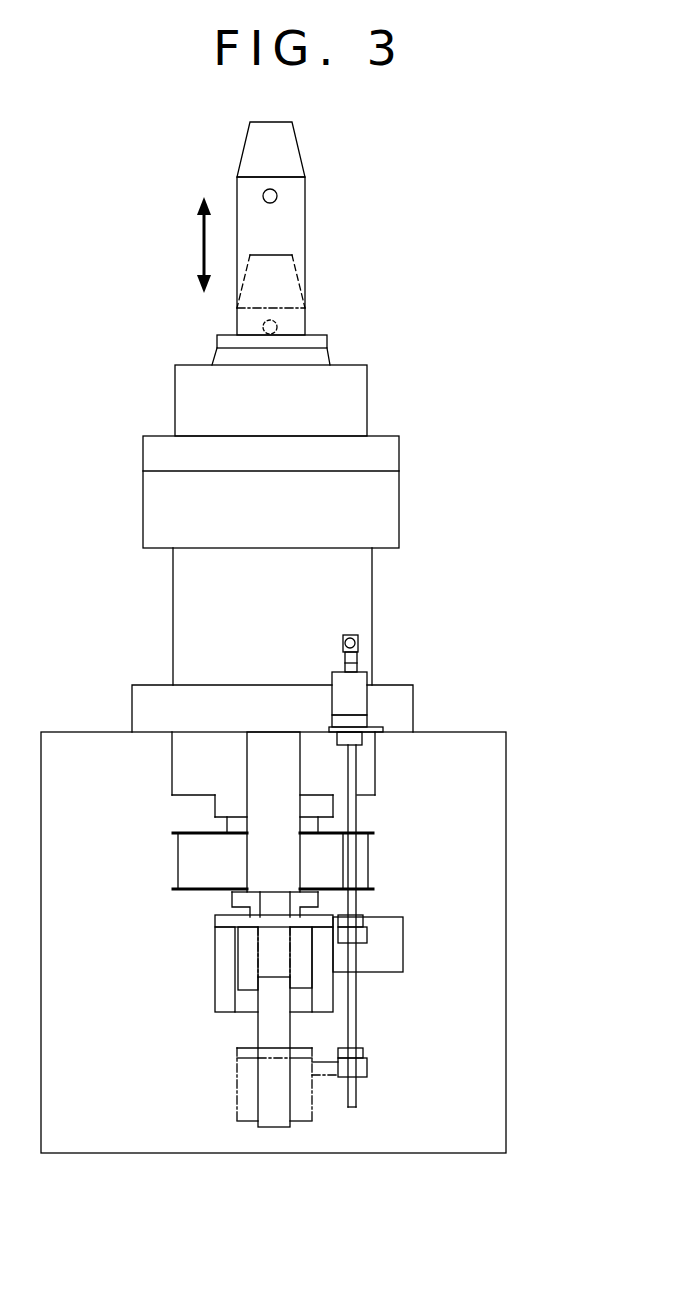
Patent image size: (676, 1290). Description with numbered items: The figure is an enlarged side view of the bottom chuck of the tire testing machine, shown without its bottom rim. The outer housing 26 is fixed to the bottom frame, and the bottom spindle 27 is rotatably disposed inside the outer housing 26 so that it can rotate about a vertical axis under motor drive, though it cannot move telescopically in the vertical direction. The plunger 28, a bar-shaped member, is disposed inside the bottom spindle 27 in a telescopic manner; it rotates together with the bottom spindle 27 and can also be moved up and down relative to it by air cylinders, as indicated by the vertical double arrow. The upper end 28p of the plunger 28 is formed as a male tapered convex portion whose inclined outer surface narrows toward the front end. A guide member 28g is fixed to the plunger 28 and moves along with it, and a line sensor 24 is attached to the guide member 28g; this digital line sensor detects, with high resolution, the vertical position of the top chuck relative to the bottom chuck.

The upper end of the plunger 28p is at (280, 150).
The plunger 28 is at (291, 226).
The bottom spindle 27 is at (202, 400).
The outer housing 26 is at (198, 617).
The line sensor 24 is at (350, 697).
The guide member 28g is at (273, 952).